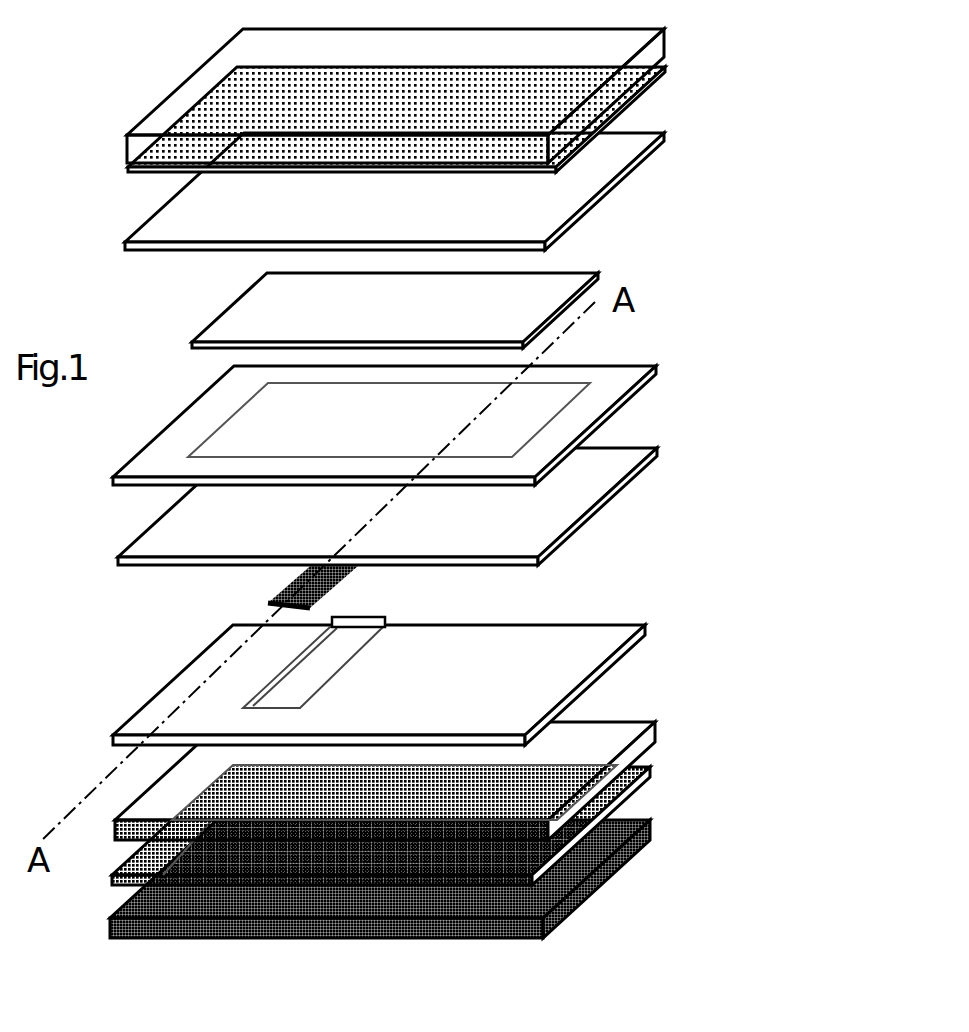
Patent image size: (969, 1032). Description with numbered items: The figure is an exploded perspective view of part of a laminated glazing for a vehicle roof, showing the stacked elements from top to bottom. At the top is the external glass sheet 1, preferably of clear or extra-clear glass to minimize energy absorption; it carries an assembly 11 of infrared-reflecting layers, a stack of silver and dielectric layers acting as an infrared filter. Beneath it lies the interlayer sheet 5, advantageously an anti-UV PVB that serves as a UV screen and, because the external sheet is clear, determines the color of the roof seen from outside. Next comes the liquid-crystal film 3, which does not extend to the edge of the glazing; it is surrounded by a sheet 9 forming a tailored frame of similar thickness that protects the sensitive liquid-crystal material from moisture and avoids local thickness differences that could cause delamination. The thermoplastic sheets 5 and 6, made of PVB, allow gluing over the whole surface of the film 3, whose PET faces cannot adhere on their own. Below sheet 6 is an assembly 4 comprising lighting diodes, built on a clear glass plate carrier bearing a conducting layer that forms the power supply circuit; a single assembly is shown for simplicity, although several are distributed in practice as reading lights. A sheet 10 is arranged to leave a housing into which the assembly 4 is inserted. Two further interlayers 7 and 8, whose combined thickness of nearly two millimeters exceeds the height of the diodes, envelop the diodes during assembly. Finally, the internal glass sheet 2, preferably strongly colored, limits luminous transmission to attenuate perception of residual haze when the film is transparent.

The external glass sheet 1 is at (633, 48).
The assembly of infrared-reflecting layers 11 is at (628, 107).
The interlayer sheet 5 is at (489, 222).
The liquid-crystal film 3 is at (484, 315).
The frame sheet 9 is at (656, 368).
The thermoplastic interlayer sheet 6 is at (490, 543).
The assembly comprising lighting diodes 4 is at (340, 575).
The housing sheet 10 is at (500, 678).
The interlayer 7 is at (598, 738).
The interlayer 8 is at (653, 772).
The internal glass sheet 2 is at (647, 817).